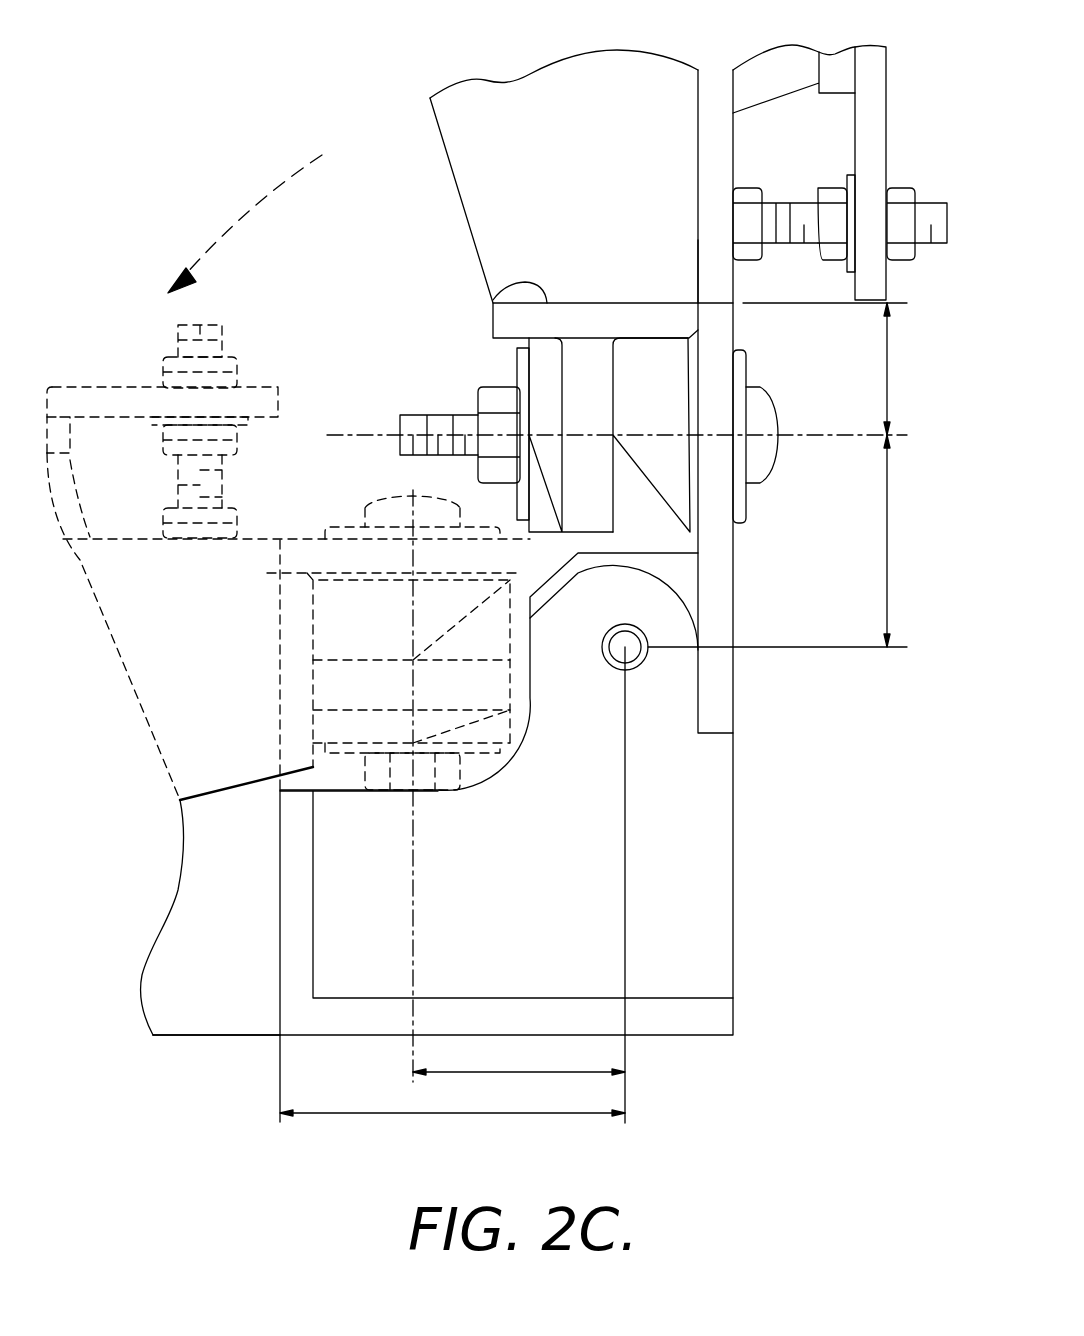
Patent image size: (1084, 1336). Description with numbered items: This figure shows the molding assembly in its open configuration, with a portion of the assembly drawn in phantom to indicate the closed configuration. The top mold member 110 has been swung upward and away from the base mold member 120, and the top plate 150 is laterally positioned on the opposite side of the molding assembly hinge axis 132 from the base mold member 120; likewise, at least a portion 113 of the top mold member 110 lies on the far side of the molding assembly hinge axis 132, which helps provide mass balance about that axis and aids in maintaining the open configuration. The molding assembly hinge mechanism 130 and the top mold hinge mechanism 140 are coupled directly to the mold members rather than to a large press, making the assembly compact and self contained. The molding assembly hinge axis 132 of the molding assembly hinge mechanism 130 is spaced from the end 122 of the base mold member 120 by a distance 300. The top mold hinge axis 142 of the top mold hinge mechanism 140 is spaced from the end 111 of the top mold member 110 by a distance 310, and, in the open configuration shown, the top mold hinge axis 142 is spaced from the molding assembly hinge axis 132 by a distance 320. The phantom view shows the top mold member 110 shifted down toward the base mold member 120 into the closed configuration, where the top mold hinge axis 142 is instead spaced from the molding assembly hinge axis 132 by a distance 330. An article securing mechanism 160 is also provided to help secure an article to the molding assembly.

The top mold member 110 is at (462, 152).
The end of the top mold member 111 is at (493, 297).
The portion of the top mold member 113 is at (680, 280).
The base mold member 120 is at (192, 902).
The end of the base mold member 122 is at (280, 987).
The molding assembly hinge mechanism 130 is at (750, 917).
The molding assembly hinge axis 132 is at (602, 647).
The top mold hinge mechanism 140 is at (755, 492).
The top mold hinge axis 142 is at (790, 433).
The top plate 150 is at (717, 86).
The article securing mechanism 160 is at (877, 112).
The distance 300 is at (440, 1115).
The distance 310 is at (888, 372).
The distance 320 is at (888, 540).
The distance 330 is at (523, 1073).